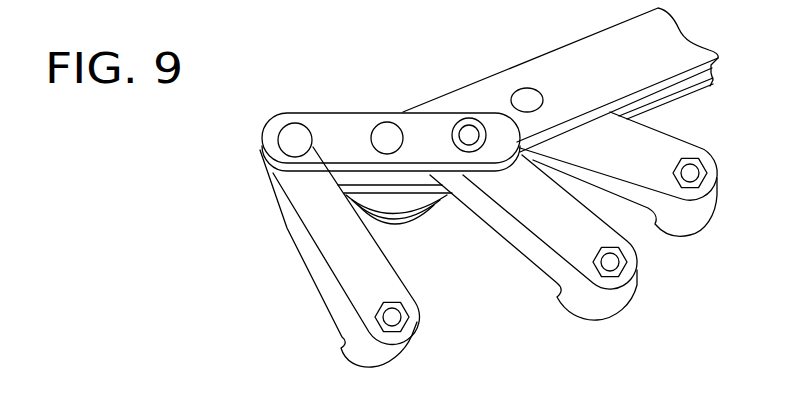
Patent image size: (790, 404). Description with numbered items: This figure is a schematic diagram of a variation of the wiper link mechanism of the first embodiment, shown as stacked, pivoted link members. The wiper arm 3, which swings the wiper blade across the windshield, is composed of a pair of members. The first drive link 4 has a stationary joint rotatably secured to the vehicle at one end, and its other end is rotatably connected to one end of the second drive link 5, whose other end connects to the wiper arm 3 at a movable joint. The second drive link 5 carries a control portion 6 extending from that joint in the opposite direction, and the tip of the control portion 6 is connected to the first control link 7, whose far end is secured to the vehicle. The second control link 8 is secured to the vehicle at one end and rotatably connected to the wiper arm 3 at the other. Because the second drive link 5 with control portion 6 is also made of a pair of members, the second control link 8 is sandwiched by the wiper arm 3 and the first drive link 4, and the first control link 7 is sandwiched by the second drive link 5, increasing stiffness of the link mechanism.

The wiper arm 3 is at (573, 67).
The first drive link 4 is at (353, 272).
The second drive link 5 is at (347, 128).
The first control portion 6 is at (442, 137).
The first control link 7 is at (552, 222).
The second control link 8 is at (655, 148).